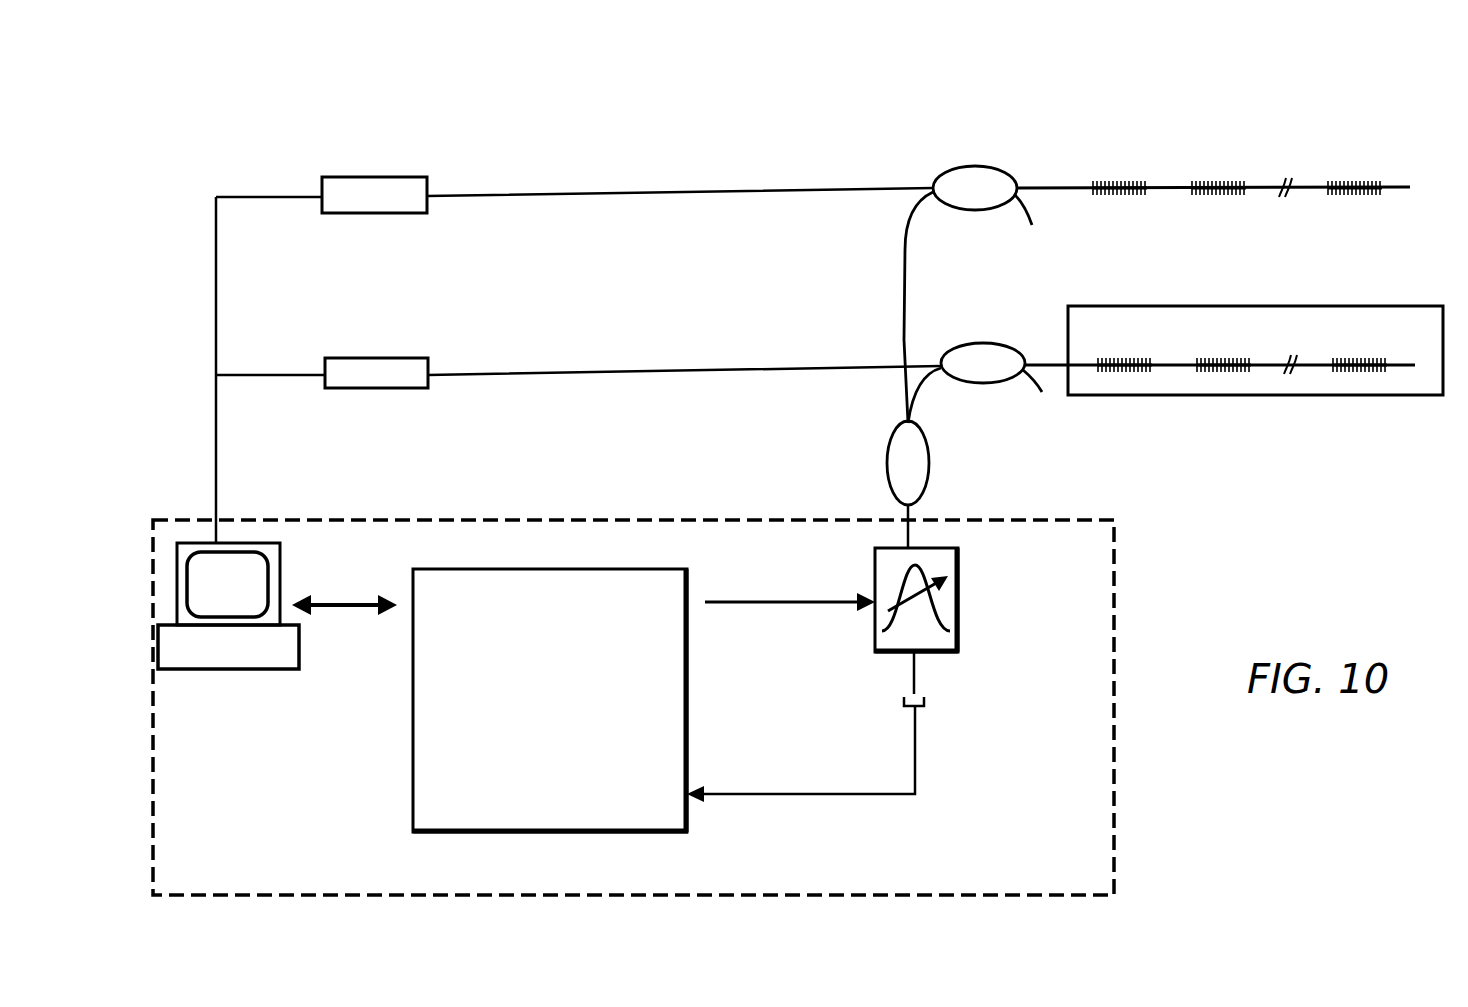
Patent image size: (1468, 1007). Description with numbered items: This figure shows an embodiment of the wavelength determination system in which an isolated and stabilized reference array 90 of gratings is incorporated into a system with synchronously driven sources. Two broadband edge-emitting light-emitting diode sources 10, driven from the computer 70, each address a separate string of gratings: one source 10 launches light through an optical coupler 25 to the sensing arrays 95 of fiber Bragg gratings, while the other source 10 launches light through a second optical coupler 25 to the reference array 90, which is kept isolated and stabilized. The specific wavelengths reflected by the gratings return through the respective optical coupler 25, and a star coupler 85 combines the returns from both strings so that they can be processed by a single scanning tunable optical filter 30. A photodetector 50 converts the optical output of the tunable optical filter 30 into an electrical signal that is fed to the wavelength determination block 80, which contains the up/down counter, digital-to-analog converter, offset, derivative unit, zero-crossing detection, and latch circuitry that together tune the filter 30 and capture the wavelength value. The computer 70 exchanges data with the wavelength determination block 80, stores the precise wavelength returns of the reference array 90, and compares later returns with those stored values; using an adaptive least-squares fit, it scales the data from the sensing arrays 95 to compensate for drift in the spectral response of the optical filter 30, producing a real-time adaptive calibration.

The edge-emitting light-emitting diode 10 is at (427, 212).
The optical coupler 25 is at (975, 225).
The tunable optical filter 30 is at (973, 633).
The photodetector 50 is at (933, 703).
The computer 70 is at (205, 675).
The wavelength determination block 80 is at (413, 803).
The star coupler 85 is at (883, 441).
The reference array 90 is at (1385, 305).
The sensing arrays 95 is at (1108, 170).